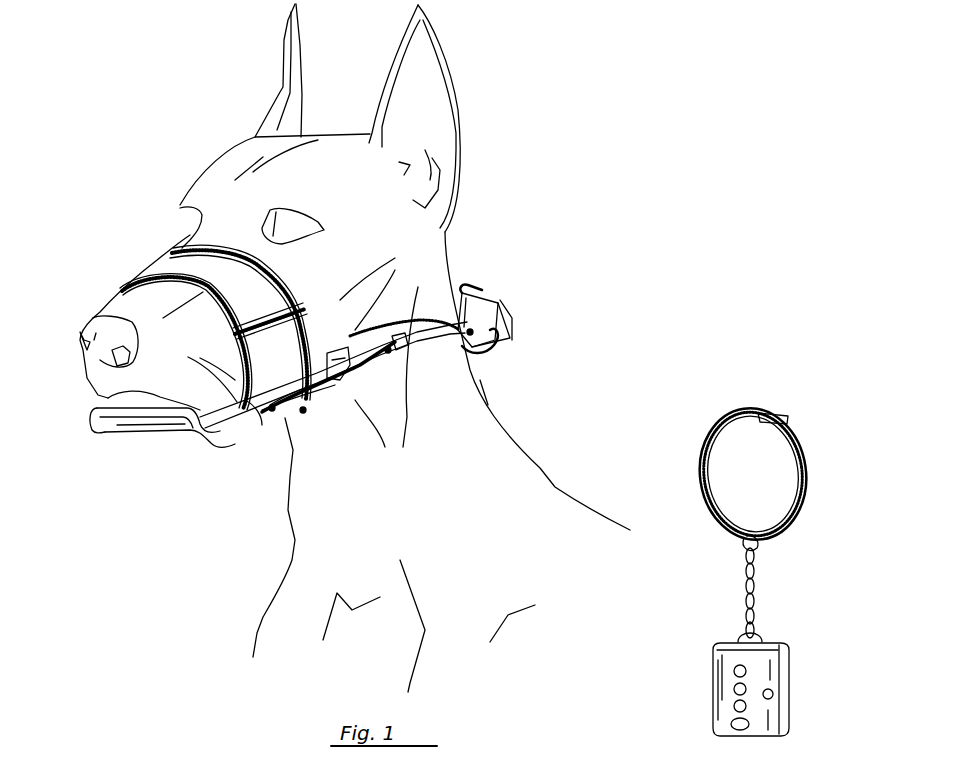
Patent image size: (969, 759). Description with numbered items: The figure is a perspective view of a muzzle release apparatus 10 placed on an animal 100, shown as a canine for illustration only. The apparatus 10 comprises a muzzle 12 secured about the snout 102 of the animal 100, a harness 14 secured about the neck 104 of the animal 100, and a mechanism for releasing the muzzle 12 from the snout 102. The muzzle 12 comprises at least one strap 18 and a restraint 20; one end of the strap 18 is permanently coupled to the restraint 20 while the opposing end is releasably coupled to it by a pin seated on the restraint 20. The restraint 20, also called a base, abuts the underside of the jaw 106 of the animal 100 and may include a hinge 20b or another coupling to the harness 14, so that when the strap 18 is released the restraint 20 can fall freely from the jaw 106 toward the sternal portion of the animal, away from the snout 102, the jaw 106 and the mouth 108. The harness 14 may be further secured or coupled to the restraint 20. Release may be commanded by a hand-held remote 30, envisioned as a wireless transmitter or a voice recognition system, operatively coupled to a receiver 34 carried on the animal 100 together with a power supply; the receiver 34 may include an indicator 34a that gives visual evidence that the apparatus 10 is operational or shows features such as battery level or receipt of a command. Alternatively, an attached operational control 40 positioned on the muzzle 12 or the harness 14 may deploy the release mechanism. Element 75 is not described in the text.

The muzzle release apparatus 10 is at (145, 92).
The muzzle 12 is at (128, 458).
The harness 14 is at (425, 345).
The strap 18 is at (168, 246).
The restraint 20 is at (210, 432).
The hinge 20b is at (335, 395).
The remote 30 is at (805, 612).
The receiver 34 is at (460, 293).
The indicator 34a is at (513, 322).
The operational control 40 is at (322, 405).
The ring 75 is at (470, 305).
The animal 100 is at (430, 165).
The snout 102 is at (96, 333).
The neck 104 is at (440, 428).
The jaw 106 is at (400, 265).
The mouth 108 is at (252, 420).